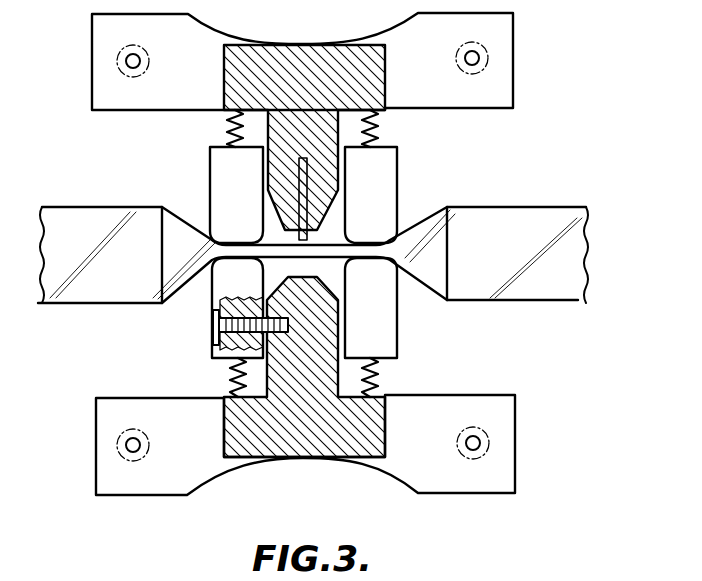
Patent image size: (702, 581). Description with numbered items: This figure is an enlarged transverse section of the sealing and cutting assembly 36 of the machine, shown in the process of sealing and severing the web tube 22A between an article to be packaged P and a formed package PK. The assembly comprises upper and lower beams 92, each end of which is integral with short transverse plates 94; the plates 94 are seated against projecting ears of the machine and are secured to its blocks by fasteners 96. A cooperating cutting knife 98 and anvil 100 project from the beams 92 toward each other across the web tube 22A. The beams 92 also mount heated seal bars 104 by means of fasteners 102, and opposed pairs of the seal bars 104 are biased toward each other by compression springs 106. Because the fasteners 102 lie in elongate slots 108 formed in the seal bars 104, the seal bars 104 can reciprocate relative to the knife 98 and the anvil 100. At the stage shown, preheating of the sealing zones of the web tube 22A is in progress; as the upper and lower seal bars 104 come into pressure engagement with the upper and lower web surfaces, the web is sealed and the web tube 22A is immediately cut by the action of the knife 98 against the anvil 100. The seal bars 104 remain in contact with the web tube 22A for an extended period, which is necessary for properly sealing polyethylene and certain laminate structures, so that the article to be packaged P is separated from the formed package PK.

The beam 92 is at (322, 56).
The transverse plate 94 is at (498, 80).
The fastener 96 is at (150, 64).
The cutting knife 98 is at (299, 166).
The anvil 100 is at (300, 277).
The fastener 102 is at (213, 333).
The heated seal bar 104 is at (210, 176).
The compression spring 106 is at (227, 125).
The elongate slot 108 is at (210, 348).
The web tube 22A is at (94, 207).
The sealing and cutting assembly 36 is at (470, 192).
The article to be packaged P is at (108, 287).
The formed package PK is at (557, 280).